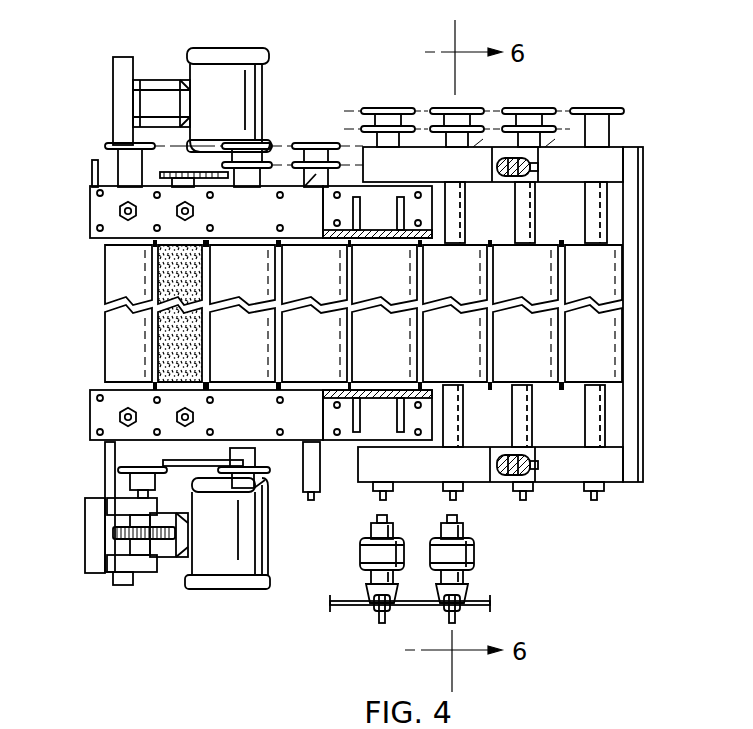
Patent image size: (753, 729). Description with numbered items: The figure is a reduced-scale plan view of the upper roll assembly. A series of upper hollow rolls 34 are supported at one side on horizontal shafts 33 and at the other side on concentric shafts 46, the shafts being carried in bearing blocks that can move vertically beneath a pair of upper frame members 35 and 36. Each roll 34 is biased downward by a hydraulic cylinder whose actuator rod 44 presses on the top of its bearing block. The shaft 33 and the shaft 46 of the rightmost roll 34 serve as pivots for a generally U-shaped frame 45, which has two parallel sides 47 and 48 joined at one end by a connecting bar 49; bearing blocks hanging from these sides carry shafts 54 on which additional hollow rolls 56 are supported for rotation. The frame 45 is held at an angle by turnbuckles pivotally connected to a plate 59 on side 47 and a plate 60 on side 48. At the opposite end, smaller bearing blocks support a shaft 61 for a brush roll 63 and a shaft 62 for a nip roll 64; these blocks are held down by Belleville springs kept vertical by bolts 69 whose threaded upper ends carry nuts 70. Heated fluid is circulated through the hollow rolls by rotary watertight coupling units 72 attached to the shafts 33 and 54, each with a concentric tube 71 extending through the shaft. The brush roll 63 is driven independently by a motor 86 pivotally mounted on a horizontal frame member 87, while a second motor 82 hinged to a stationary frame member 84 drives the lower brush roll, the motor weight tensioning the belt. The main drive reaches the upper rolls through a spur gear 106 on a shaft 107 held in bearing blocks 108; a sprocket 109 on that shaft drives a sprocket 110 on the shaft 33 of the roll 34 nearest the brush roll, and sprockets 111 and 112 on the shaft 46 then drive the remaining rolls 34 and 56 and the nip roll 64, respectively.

The horizontal shaft 33 is at (370, 484).
The upper hollow roll 34 is at (225, 357).
The upper frame member 35 is at (223, 427).
The upper frame member 36 is at (223, 230).
The actuator rod 44 is at (513, 484).
The U-shaped frame 45 is at (525, 292).
The shaft 46 is at (383, 183).
The frame side 47 is at (605, 465).
The frame side 48 is at (568, 162).
The connecting bar 49 is at (645, 233).
The shaft 54 is at (597, 415).
The hollow roll 56 is at (435, 282).
The plate 59 is at (532, 472).
The plate 60 is at (523, 158).
The shaft 61 is at (168, 346).
The shaft 62 is at (120, 375).
The brush roll 63 is at (165, 268).
The nip roll 64 is at (112, 290).
The vertical bolt 69 is at (126, 209).
The nut 70 is at (183, 424).
The concentric tube 71 is at (450, 614).
The rotary watertight coupling unit 72 is at (352, 552).
The motor 82 is at (222, 568).
The stationary frame member 84 is at (120, 582).
The motor 86 is at (216, 84).
The horizontal frame member 87 is at (122, 68).
The spur gear 106 is at (168, 540).
The shaft 107 is at (143, 553).
The bearing block 108 is at (115, 562).
The sprocket 109 is at (138, 470).
The sprocket 110 is at (257, 472).
The sprocket 111 is at (262, 170).
The sprocket 112 is at (270, 145).